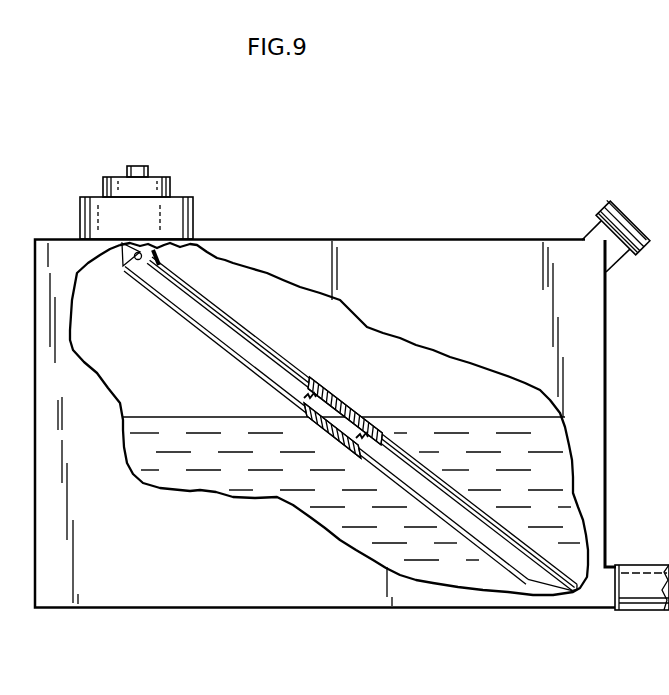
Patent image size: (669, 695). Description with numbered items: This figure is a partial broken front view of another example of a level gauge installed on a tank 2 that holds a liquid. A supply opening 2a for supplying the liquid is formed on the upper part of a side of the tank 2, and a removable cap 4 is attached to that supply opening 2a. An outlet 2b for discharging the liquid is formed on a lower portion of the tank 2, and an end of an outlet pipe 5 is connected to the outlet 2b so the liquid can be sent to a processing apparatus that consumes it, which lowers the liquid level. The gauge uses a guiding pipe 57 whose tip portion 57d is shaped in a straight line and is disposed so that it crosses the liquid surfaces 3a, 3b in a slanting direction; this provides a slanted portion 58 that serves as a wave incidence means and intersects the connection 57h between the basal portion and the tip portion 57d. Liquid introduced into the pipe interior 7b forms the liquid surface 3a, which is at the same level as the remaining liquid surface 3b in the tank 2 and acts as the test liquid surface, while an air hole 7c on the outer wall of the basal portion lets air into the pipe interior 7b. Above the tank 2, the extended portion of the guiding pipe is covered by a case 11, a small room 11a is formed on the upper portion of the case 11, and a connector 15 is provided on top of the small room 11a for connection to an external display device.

The tank 2 is at (610, 406).
The supply opening 2a is at (617, 268).
The outlet 2b is at (614, 567).
The liquid surface 3a is at (341, 414).
The remaining liquid surface 3b is at (180, 416).
The removable cap 4 is at (598, 208).
The outlet pipe 5 is at (645, 611).
The pipe interior 7b is at (316, 394).
The air hole 7c is at (126, 266).
The case 11 is at (194, 217).
The small room 11a is at (170, 184).
The connector 15 is at (143, 166).
The guiding pipe 57 is at (201, 331).
The tip portion 57d is at (245, 321).
The connection 57h is at (160, 258).
The slanted portion 58 is at (404, 491).